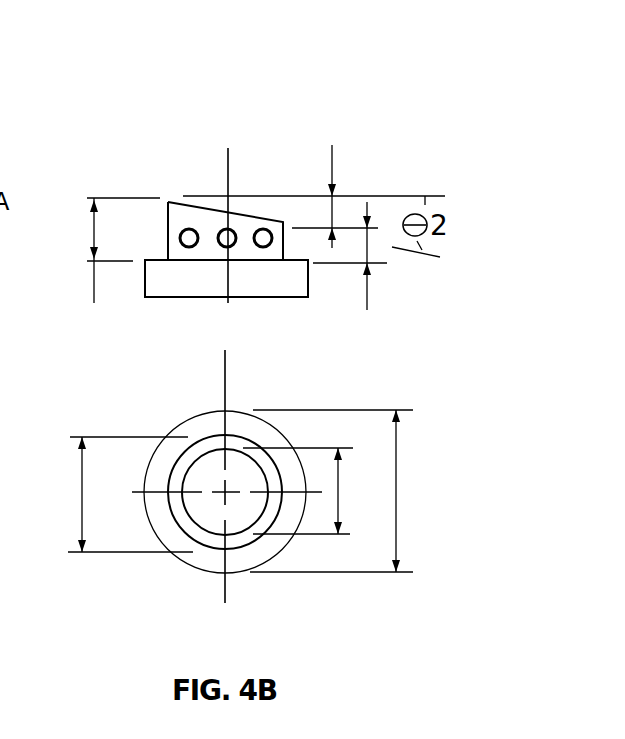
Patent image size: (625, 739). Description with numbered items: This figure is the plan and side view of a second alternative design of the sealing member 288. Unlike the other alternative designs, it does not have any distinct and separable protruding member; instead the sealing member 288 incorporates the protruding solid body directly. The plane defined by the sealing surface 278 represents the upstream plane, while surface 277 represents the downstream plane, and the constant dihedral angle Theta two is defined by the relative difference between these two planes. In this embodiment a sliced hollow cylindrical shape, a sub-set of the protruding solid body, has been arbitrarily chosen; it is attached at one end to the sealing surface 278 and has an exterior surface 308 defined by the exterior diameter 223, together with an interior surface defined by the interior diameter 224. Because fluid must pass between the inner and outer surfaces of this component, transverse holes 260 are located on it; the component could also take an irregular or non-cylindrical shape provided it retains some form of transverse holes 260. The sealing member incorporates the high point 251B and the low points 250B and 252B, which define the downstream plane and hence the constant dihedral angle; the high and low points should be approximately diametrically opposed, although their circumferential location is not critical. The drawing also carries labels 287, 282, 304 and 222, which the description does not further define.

The surface 277 is at (263, 217).
The sealing member 288 is at (177, 207).
The second end of guide body 287 is at (248, 275).
The transverse holes 260 is at (221, 256).
The exterior surface 308 is at (166, 230).
The base plate 282 is at (265, 297).
The high point 251B is at (111, 269).
The low point 252B is at (314, 181).
The low point 250B is at (355, 274).
The sealing surface 278 is at (200, 425).
The intermediate cylindrical surface 304 is at (207, 563).
The exterior diameter 223 is at (111, 494).
The outer diameter 222 is at (349, 491).
The interior diameter 224 is at (343, 498).